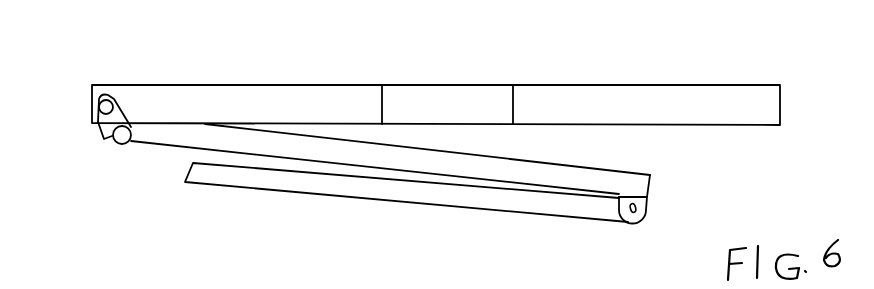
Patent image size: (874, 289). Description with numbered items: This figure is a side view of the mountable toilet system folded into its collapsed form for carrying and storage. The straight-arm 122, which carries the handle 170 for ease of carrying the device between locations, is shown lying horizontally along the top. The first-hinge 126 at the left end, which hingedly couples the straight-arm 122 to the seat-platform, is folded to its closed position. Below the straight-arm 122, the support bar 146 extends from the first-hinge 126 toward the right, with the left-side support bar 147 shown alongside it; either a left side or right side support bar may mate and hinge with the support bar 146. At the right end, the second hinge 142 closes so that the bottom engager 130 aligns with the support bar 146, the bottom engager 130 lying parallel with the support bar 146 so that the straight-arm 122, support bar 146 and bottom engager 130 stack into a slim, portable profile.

The straight-arm 122 is at (252, 78).
The handle 170 is at (453, 78).
The first-hinge 126 is at (85, 148).
The support bar 146 is at (623, 167).
The left-side support bar 147 is at (642, 167).
The second hinge 142 is at (658, 223).
The bottom-engager 130 is at (394, 217).